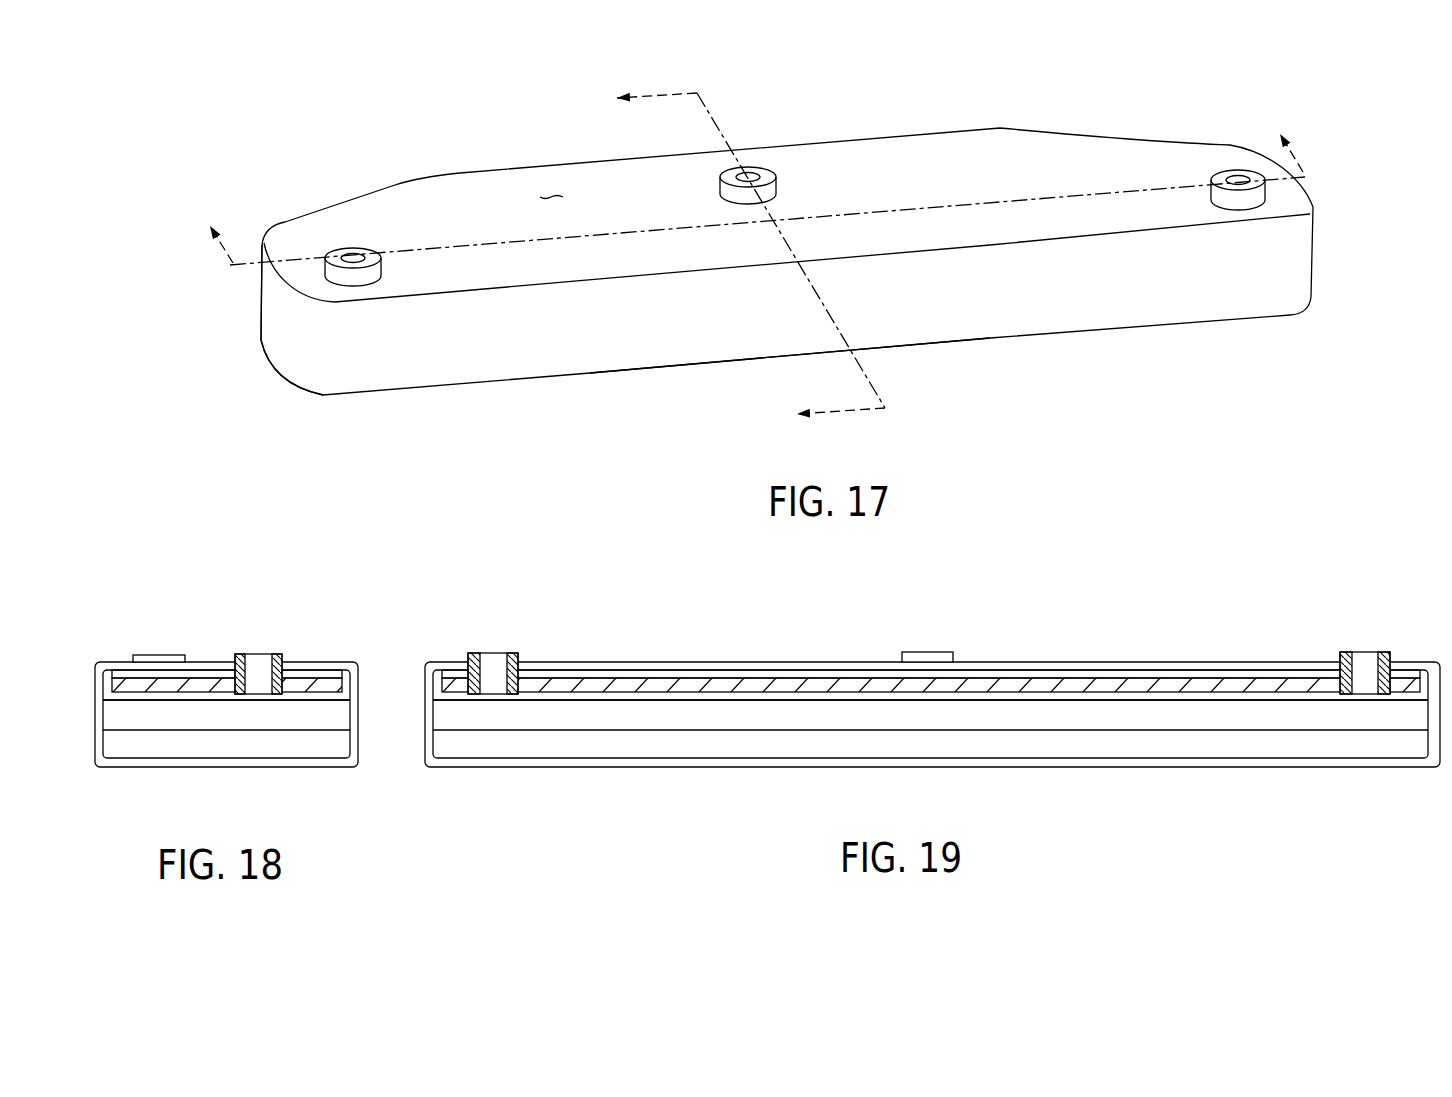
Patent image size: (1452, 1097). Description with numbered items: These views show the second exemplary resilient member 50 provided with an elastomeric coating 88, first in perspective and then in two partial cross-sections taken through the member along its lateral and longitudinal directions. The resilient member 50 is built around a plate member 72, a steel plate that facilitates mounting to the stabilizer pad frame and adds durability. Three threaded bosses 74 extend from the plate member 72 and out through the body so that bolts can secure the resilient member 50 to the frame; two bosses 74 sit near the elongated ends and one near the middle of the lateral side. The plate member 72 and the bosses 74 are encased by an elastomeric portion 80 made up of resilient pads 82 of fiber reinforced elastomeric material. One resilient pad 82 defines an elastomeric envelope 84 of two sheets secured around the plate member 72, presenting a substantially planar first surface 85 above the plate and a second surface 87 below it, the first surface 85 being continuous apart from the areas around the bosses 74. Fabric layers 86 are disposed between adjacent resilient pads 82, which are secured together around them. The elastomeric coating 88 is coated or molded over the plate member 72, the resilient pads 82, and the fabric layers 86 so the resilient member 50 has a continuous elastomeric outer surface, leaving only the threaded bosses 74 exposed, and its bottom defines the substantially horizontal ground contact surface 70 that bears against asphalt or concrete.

In FIG. 17, the resilient member 50 is at (758, 228).
In FIG. 18, the resilient member 50 is at (228, 684).
In FIG. 19, the resilient member 50 is at (932, 683).
In FIG. 17, the ground contact surface 70 is at (998, 347).
In FIG. 18, the ground contact surface 70 is at (205, 767).
In FIG. 19, the ground contact surface 70 is at (1122, 767).
In FIG. 18, the plate member 72 is at (197, 685).
In FIG. 19, the plate member 72 is at (740, 685).
In FIG. 17, the threaded boss 74 is at (350, 254).
In FIG. 18, the threaded boss 74 is at (160, 657).
In FIG. 19, the threaded boss 74 is at (510, 653).
In FIG. 17, the elastomeric portion 80 is at (285, 372).
In FIG. 18, the resilient pad 82 is at (153, 695).
In FIG. 19, the resilient pad 82 is at (530, 695).
In FIG. 18, the elastomeric envelope 84 is at (310, 680).
In FIG. 19, the elastomeric envelope 84 is at (595, 675).
In FIG. 17, the first surface 85 is at (553, 193).
In FIG. 18, the fabric layer 86 is at (262, 702).
In FIG. 19, the fabric layer 86 is at (723, 700).
In FIG. 17, the second surface 87 is at (770, 362).
In FIG. 17, the elastomeric coating 88 is at (1072, 160).
In FIG. 18, the elastomeric coating 88 is at (120, 763).
In FIG. 19, the elastomeric coating 88 is at (432, 747).